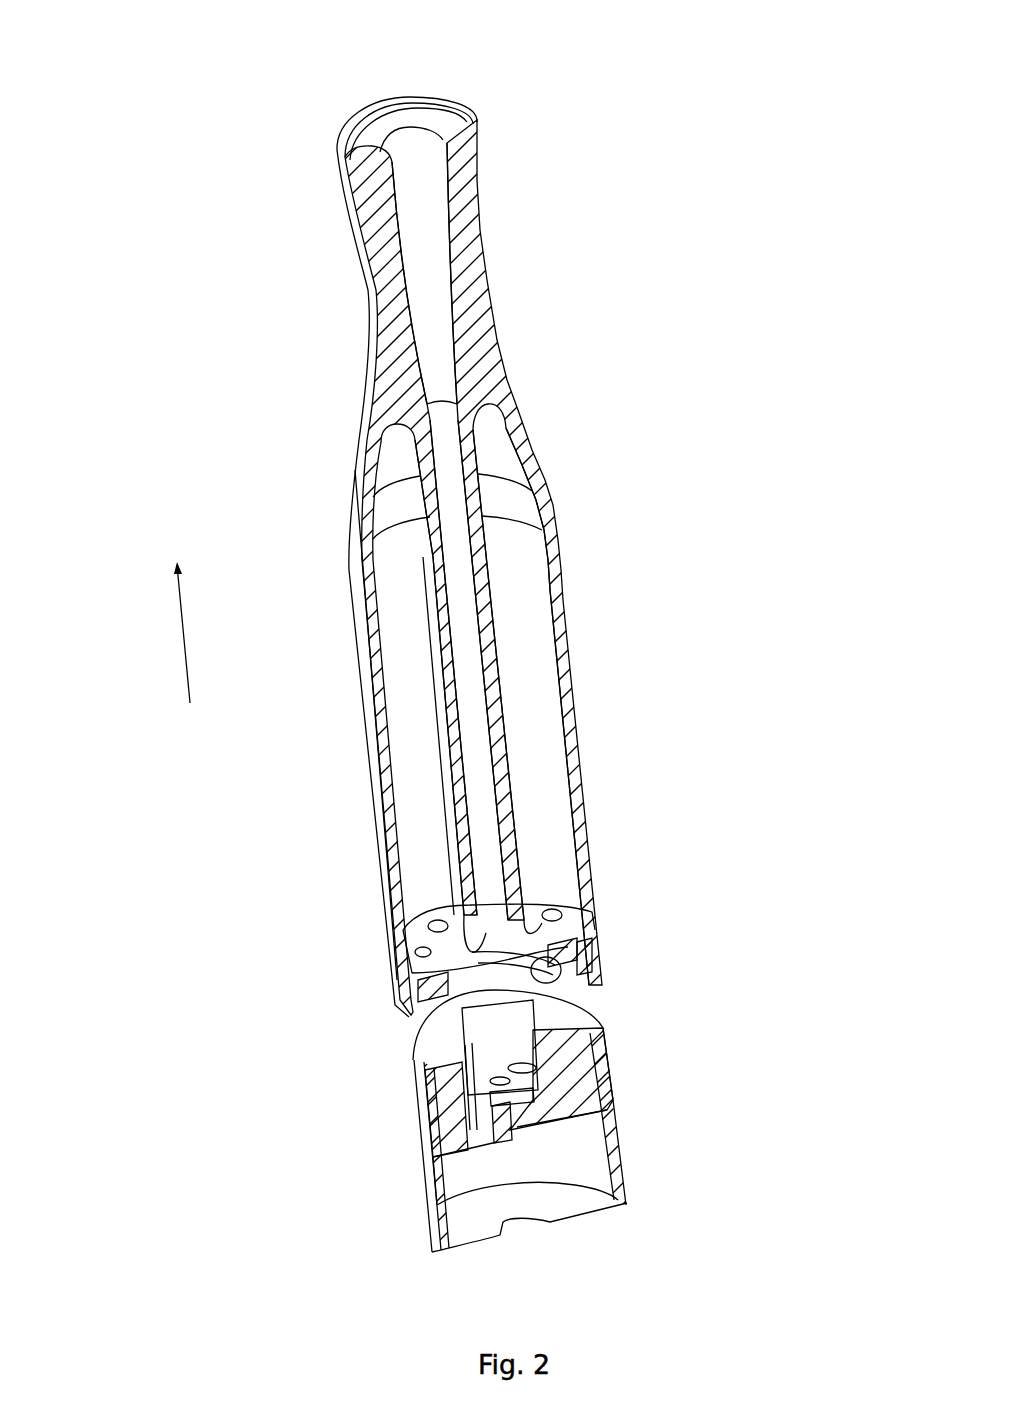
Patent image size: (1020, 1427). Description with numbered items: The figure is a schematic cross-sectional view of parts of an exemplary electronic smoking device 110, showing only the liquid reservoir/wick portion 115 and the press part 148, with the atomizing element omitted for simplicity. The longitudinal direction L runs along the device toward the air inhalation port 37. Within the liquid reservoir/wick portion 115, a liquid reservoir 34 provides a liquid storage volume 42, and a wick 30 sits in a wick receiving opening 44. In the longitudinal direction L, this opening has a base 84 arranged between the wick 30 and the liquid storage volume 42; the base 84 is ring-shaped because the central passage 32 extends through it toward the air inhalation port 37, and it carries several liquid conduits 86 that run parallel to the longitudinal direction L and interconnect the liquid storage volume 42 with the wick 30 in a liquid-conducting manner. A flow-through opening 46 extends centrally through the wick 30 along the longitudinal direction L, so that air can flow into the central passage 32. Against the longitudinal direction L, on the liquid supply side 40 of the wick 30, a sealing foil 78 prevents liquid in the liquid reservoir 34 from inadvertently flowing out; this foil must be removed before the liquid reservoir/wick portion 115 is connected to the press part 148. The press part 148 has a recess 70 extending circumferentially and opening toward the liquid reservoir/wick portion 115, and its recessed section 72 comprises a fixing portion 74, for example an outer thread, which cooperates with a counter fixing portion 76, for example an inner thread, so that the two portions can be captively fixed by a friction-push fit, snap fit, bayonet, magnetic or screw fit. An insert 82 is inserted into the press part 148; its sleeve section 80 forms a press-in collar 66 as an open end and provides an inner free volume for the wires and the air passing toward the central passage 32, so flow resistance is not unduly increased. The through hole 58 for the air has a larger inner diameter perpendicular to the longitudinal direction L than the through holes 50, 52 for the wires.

The air inhalation port 37 is at (391, 85).
The electronic smoking device 110 is at (690, 368).
The central passage 32 is at (437, 372).
The liquid reservoir/wick portion 115 is at (662, 614).
The liquid reservoir 34 is at (558, 577).
The liquid storage volume 42 is at (542, 718).
The wick 30 is at (583, 790).
The liquid conduits 86 is at (440, 918).
The base 84 is at (418, 918).
The liquid supply side 40 is at (560, 908).
The wick receiving opening 44 is at (510, 680).
The flow-through opening 46 is at (600, 998).
The sealing foil 78 is at (536, 990).
The recess 70 is at (609, 1007).
The recessed section 72 is at (609, 1007).
The fixing portion 74 is at (598, 1000).
The sleeve section 80 is at (617, 1003).
The counter fixing portion 76 is at (397, 1000).
The press-in collar 66 is at (422, 1054).
The through hole 52 is at (520, 1062).
The insert 82 is at (433, 1100).
The through hole 50 is at (500, 1150).
The press part 148 is at (620, 1132).
The through hole 58 is at (525, 1142).
The longitudinal direction L is at (182, 640).